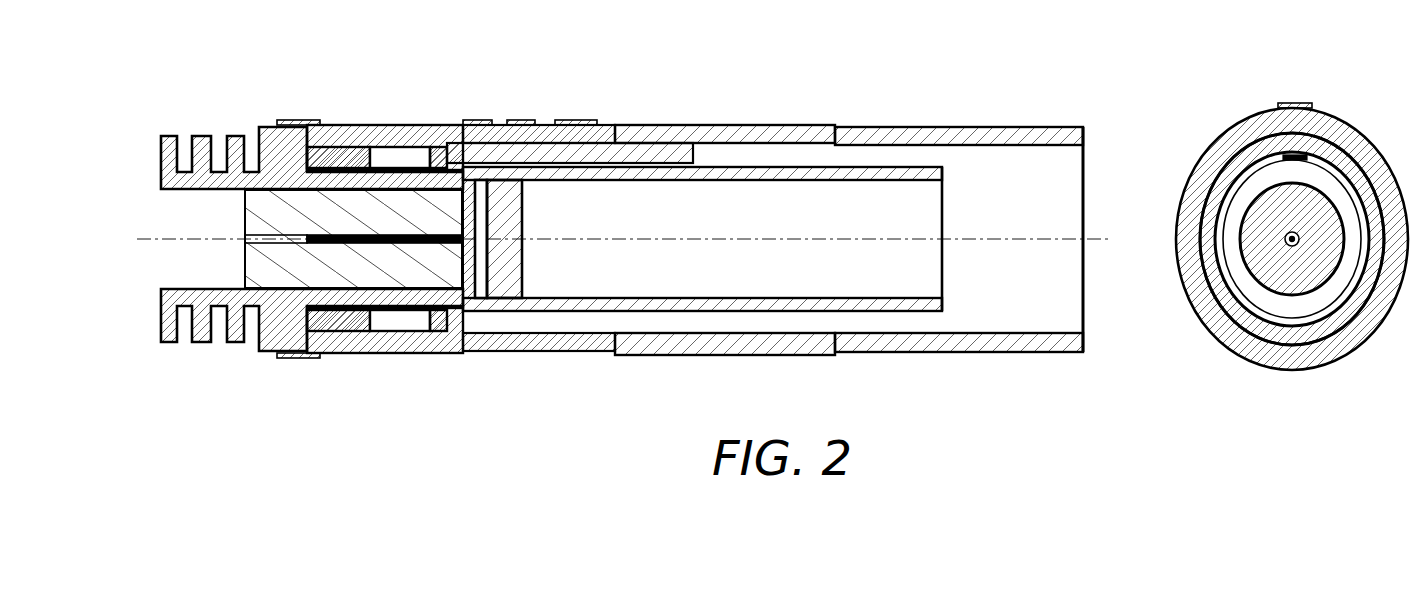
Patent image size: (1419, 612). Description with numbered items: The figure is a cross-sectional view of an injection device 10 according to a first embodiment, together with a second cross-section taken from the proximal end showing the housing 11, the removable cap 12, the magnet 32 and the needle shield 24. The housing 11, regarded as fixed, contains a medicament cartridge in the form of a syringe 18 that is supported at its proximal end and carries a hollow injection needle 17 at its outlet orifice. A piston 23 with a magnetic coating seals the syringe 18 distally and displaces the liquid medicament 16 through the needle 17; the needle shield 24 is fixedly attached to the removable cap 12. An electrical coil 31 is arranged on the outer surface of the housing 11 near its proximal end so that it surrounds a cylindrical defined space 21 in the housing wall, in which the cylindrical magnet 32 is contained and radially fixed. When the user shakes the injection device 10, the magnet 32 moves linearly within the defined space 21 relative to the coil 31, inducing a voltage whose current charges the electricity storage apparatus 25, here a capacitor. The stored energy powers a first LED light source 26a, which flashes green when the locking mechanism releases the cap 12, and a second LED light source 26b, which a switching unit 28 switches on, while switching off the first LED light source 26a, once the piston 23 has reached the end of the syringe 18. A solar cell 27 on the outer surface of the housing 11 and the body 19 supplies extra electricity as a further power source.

The injection device 10 is at (807, 70).
The housing 11 is at (1013, 340).
The removable cap 12 is at (203, 336).
The liquid medicament 16 is at (481, 290).
The injection needle 17 is at (443, 244).
The syringe 18 is at (907, 304).
The body 19 is at (1034, 158).
The defined space 21 is at (386, 152).
The piston 23 is at (513, 268).
The needle shield 24 is at (418, 158).
The electricity storage apparatus 25 is at (604, 134).
The first LED light source 26a is at (520, 120).
The second LED light source 26b is at (574, 120).
The solar cell 27 is at (719, 130).
The switching unit 28 is at (476, 120).
The electrical coil 31 is at (375, 344).
The magnet 32 is at (340, 152).